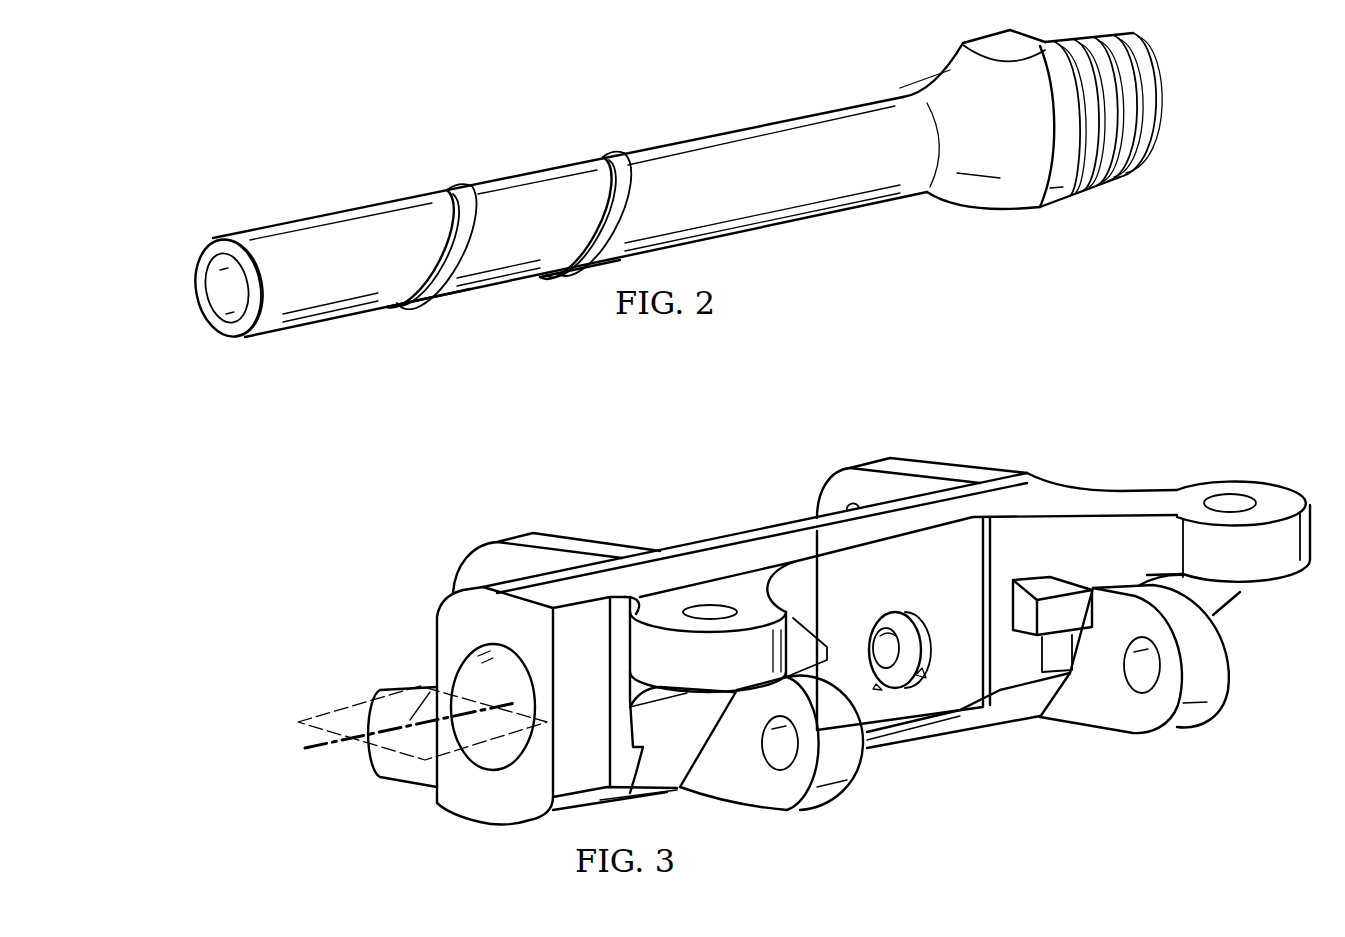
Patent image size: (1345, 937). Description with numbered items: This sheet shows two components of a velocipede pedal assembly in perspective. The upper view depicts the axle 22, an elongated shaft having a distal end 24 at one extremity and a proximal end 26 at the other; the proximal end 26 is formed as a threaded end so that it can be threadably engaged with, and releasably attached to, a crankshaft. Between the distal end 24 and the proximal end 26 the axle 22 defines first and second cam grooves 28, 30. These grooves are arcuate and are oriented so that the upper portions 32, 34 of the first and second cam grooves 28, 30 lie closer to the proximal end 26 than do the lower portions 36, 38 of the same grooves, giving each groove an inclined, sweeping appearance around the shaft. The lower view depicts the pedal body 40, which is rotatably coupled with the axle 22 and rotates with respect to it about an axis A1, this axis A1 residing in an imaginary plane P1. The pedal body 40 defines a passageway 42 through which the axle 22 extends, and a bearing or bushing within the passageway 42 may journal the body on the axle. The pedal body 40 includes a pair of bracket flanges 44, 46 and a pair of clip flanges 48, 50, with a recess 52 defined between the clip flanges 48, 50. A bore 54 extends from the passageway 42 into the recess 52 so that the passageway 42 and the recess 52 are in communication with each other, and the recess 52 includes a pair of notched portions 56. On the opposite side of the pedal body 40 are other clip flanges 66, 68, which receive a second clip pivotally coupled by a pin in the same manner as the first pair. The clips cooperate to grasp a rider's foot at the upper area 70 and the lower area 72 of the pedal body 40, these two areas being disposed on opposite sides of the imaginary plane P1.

In FIG. 2, the axle 22 is at (497, 101).
In FIG. 2, the distal end 24 is at (187, 278).
In FIG. 2, the proximal end 26 is at (1172, 92).
In FIG. 2, the first cam groove 28 is at (620, 172).
In FIG. 2, the second cam groove 30 is at (467, 208).
In FIG. 2, the upper portion 32 is at (598, 155).
In FIG. 2, the upper portion 34 is at (445, 186).
In FIG. 2, the lower portion 36 is at (538, 286).
In FIG. 2, the lower portion 38 is at (388, 314).
In FIG. 3, the pedal body 40 is at (1100, 410).
In FIG. 3, the passageway 42 is at (503, 751).
In FIG. 3, the bracket flange 44 is at (632, 611).
In FIG. 3, the bracket flange 46 is at (1275, 494).
In FIG. 3, the clip flange 48 is at (770, 797).
In FIG. 3, the clip flange 50 is at (1133, 723).
In FIG. 3, the recess 52 is at (934, 642).
In FIG. 3, the bore 54 is at (898, 626).
In FIG. 3, the notched portions 56 is at (878, 696).
In FIG. 3, the clip flange 66 is at (833, 490).
In FIG. 3, the clip flange 68 is at (470, 563).
In FIG. 3, the upper area 70 is at (880, 443).
In FIG. 3, the lower area 72 is at (808, 822).
In FIG. 3, the imaginary plane P1 is at (328, 713).
In FIG. 3, the axis A1 is at (393, 733).